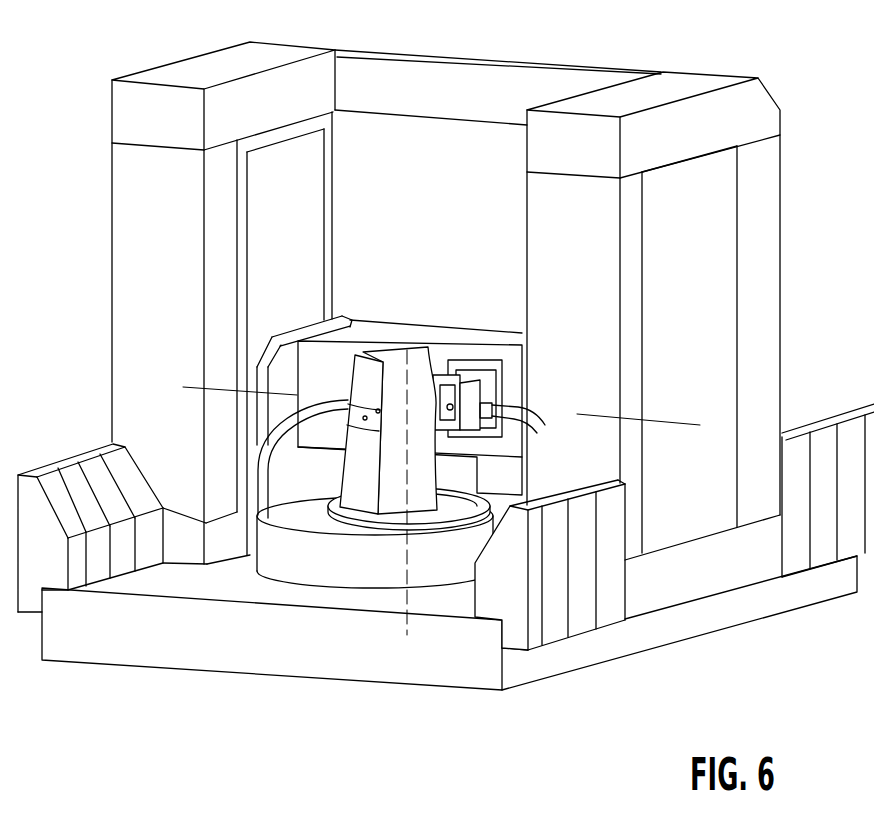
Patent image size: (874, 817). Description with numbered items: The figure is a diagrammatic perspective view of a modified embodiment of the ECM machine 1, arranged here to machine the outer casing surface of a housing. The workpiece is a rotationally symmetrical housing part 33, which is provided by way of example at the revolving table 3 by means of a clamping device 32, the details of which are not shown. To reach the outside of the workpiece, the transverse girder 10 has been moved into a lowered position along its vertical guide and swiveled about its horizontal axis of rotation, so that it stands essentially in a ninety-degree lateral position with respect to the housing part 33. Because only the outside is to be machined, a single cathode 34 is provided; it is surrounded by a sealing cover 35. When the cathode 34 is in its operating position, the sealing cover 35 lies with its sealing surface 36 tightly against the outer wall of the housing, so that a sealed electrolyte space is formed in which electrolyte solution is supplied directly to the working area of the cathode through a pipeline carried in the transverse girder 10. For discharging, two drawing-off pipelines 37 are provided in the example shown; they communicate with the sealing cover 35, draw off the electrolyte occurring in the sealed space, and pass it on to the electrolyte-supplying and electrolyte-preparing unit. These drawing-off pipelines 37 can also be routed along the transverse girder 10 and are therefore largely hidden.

The ECM machine 1 is at (792, 93).
The revolving table 3 is at (372, 578).
The transverse girder 10 is at (468, 340).
The clamping device 32 is at (420, 494).
The housing part 33 is at (360, 500).
The cathode 34 is at (447, 420).
The sealing cover 35 is at (462, 376).
The sealing surface 36 is at (447, 380).
The drawing-off pipelines 37 is at (253, 455).